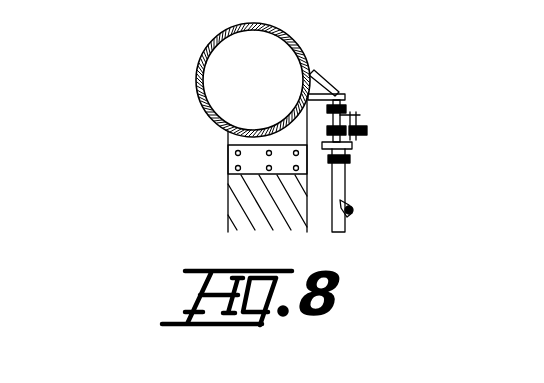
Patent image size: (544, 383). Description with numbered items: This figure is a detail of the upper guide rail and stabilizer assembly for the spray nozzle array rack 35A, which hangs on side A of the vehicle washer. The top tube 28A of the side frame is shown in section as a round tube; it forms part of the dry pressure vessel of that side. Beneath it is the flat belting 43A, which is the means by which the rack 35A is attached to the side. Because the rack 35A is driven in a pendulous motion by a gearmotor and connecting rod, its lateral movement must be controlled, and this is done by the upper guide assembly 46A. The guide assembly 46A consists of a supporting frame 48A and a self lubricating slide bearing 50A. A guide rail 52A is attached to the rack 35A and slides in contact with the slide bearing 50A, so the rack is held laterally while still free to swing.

The top tube 28A is at (202, 72).
The flat belting 43A is at (228, 193).
The guide assembly 46A is at (420, 87).
The supporting frame 48A is at (443, 115).
The self lubricating slide bearing 50A is at (458, 143).
The guide rail 52A is at (457, 193).
The spray nozzle array rack 35A is at (420, 251).